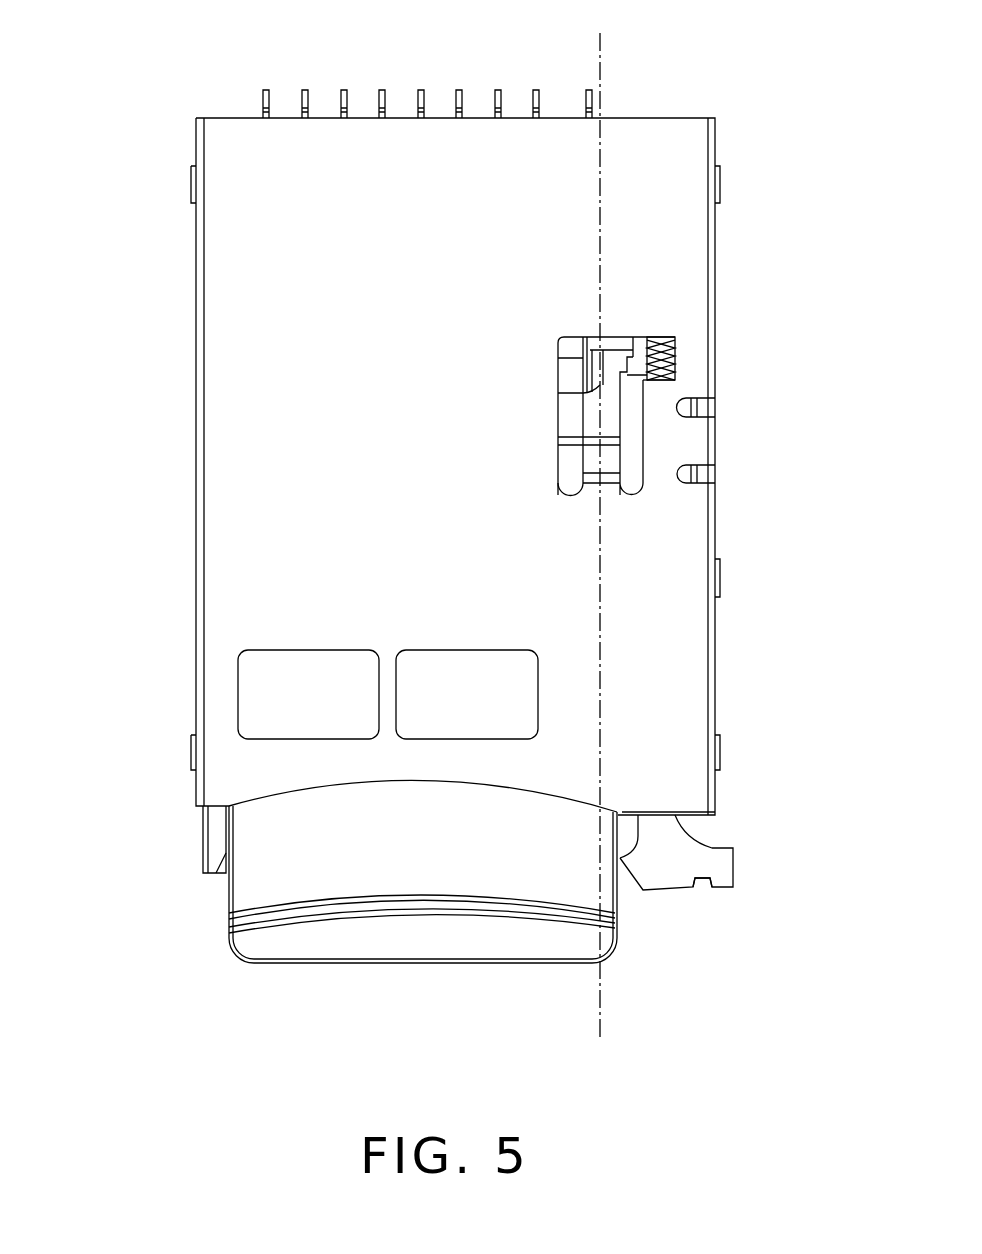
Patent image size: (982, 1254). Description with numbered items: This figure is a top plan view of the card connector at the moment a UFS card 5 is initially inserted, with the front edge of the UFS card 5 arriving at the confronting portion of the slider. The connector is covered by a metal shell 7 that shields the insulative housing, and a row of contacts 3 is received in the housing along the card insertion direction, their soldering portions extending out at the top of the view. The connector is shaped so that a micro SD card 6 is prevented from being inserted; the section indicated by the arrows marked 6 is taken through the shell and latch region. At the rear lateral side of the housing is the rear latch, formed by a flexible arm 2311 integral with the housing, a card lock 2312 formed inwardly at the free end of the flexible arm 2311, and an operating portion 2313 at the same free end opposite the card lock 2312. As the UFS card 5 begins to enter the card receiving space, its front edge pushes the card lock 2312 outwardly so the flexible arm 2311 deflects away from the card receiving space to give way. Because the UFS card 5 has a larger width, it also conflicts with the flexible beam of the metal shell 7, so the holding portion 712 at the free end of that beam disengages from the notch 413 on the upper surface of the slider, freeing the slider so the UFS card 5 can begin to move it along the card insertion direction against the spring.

The contacts 3 is at (263, 102).
The metal shell 7 is at (258, 333).
The UFS card 5 is at (570, 447).
The micro SD card 6 is at (600, 33).
The holding portion 712 is at (627, 366).
The notch 413 is at (628, 373).
The flexible arm 2311 is at (662, 821).
The card lock 2312 is at (627, 860).
The operating portion 2313 is at (723, 868).